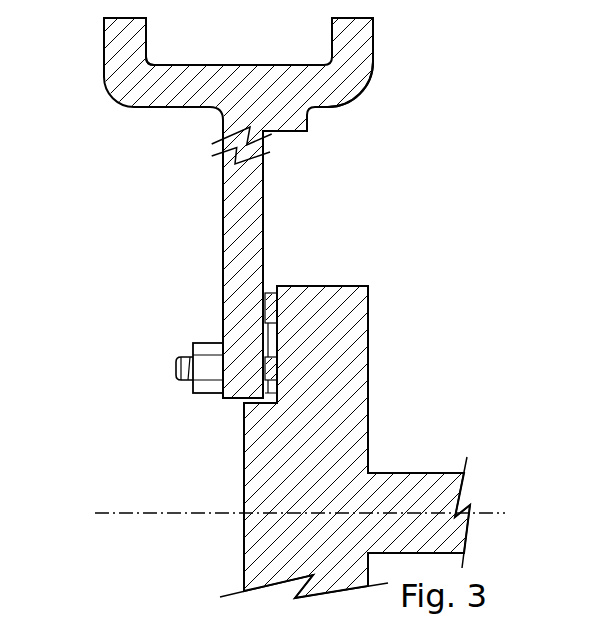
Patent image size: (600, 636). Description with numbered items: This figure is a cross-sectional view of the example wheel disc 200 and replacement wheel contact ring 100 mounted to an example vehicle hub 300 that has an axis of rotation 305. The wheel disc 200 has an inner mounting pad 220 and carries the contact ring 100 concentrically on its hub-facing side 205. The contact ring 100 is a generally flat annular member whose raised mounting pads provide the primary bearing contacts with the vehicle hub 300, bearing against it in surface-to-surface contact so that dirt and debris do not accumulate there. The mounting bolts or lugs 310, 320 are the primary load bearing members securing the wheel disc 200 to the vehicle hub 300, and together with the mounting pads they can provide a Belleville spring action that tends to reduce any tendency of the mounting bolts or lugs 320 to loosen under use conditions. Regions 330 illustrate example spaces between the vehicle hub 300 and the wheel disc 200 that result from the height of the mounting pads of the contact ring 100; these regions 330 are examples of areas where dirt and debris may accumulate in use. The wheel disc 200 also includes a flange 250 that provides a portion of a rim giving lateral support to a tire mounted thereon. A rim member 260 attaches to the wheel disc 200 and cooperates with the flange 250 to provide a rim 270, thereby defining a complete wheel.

The replacement wheel contact ring 100 is at (214, 336).
The wheel disc 200 is at (216, 191).
The hub-facing side 205 is at (264, 178).
The inner mounting pad 220 is at (266, 392).
The flange 250 is at (112, 96).
The rim member 260 is at (373, 43).
The rim 270 is at (213, 56).
The vehicle hub 300 is at (236, 485).
The axis of rotation 305 is at (178, 515).
The mounting bolt 310 is at (175, 370).
The mounting lug 320 is at (190, 389).
The regions 330 is at (268, 293).